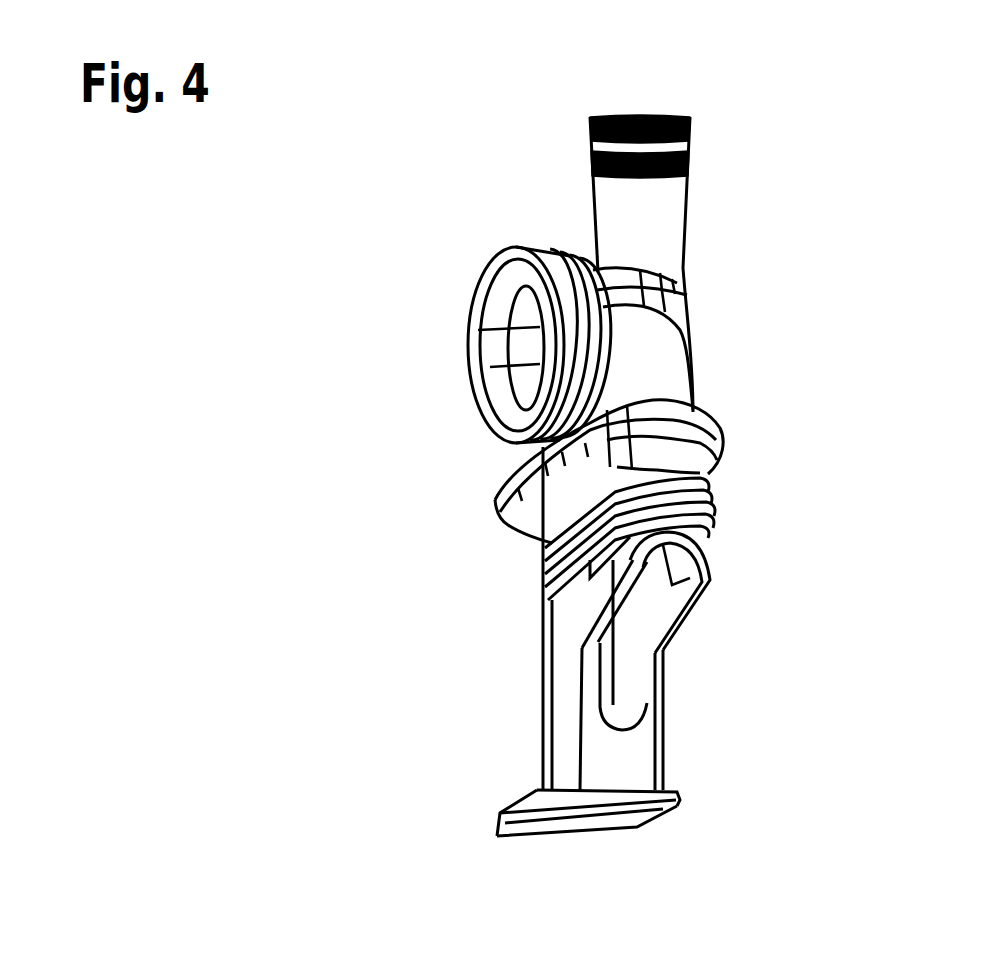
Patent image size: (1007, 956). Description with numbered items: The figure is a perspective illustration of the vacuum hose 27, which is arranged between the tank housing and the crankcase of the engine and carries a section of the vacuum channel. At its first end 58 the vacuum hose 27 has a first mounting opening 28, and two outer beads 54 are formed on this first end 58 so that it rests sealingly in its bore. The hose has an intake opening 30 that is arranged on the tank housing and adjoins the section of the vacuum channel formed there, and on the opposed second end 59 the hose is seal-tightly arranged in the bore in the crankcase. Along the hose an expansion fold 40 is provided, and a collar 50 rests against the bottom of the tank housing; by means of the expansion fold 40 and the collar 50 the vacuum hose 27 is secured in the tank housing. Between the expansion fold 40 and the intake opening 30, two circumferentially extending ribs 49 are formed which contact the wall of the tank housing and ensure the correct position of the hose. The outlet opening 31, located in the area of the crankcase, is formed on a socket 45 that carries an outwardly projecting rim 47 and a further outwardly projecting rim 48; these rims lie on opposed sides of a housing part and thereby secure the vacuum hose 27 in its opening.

The vacuum hose 27 is at (665, 474).
The first mounting opening 28 is at (563, 819).
The intake opening 30 is at (681, 661).
The outlet opening 31 is at (449, 348).
The expansion fold 40 is at (668, 457).
The socket 45 is at (455, 362).
The outwardly projecting rim 47 is at (575, 303).
The outwardly projecting rim 48 is at (512, 302).
The circumferentially extending ribs 49 is at (696, 535).
The collar 50 is at (478, 802).
The outer beads 54 is at (689, 152).
The first end 58 is at (586, 110).
The second end 59 is at (533, 618).